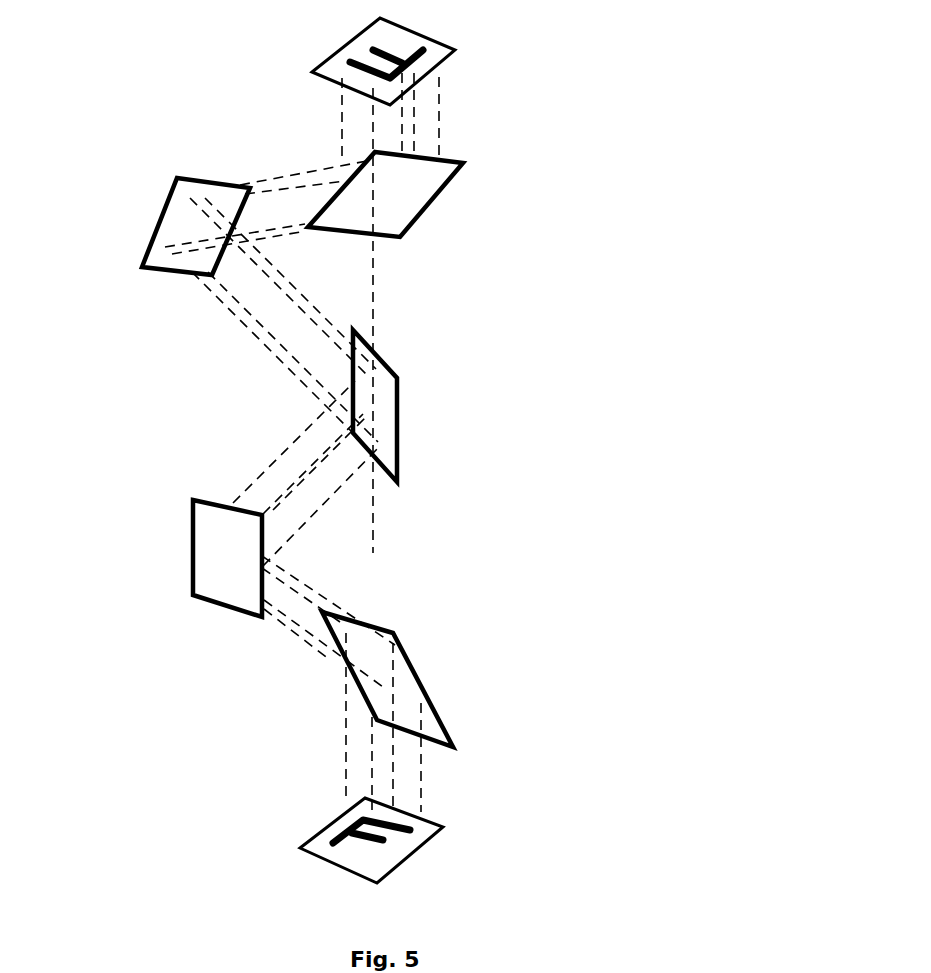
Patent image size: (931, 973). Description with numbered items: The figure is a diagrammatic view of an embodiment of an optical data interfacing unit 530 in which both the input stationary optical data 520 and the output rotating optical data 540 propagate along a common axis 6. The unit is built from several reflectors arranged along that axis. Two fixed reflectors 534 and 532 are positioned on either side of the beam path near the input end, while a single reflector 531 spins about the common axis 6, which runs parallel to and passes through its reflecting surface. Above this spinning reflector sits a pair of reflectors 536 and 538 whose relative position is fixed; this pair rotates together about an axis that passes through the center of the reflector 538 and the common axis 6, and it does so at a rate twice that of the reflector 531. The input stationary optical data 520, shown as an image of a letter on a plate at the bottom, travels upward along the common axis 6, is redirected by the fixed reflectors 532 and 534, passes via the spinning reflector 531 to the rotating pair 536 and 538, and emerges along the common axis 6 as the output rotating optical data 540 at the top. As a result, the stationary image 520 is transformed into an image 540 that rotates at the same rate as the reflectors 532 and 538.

The optical imaging system 530 is at (690, 435).
The output rotating optical data 540 is at (472, 49).
The reflector 538 is at (415, 196).
The reflector 536 is at (135, 229).
The common axis 6 is at (400, 273).
The reflector 531 is at (420, 406).
The fixed reflector 534 is at (170, 574).
The fixed reflector 532 is at (440, 676).
The input stationary optical data 520 is at (280, 837).